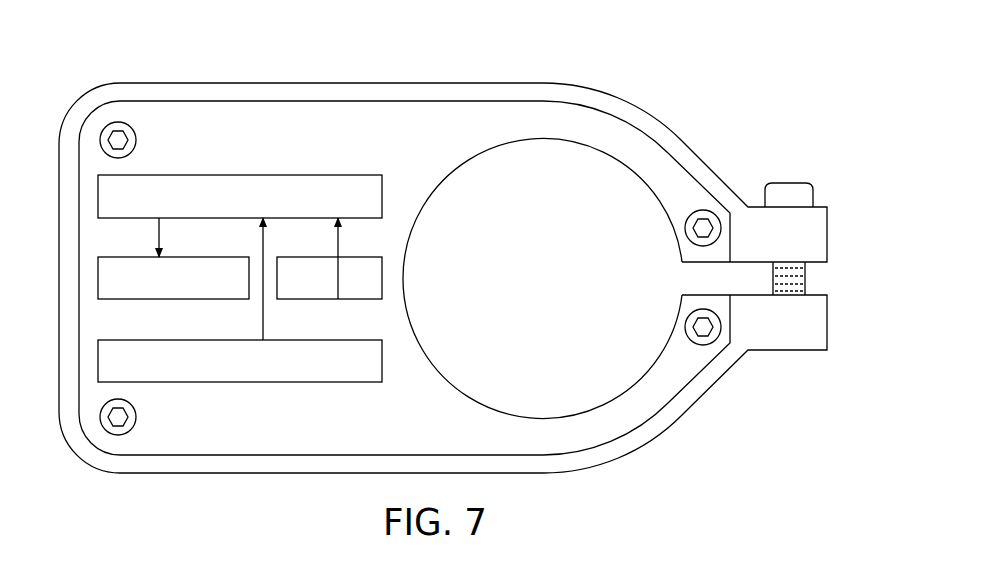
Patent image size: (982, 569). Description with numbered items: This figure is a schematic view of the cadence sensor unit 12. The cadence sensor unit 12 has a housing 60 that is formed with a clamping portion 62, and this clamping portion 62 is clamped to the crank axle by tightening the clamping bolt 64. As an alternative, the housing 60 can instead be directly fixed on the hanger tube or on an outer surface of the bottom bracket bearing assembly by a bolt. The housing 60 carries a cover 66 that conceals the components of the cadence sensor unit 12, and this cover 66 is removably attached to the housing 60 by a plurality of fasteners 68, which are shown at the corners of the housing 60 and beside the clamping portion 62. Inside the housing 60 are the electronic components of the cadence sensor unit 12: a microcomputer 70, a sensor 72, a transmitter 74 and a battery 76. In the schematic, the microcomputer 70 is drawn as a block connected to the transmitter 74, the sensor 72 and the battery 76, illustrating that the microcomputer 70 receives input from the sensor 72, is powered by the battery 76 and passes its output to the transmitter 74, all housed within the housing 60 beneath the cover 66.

The cadence sensor unit 12 is at (203, 57).
The housing 60 is at (457, 82).
The clamping portion 62 is at (782, 365).
The clamping bolt 64 is at (803, 183).
The cover 66 is at (253, 427).
The fasteners 68 is at (136, 134).
The microcomputer 70 is at (290, 175).
The sensor 72 is at (322, 382).
The transmitter 74 is at (153, 300).
The battery 76 is at (317, 300).